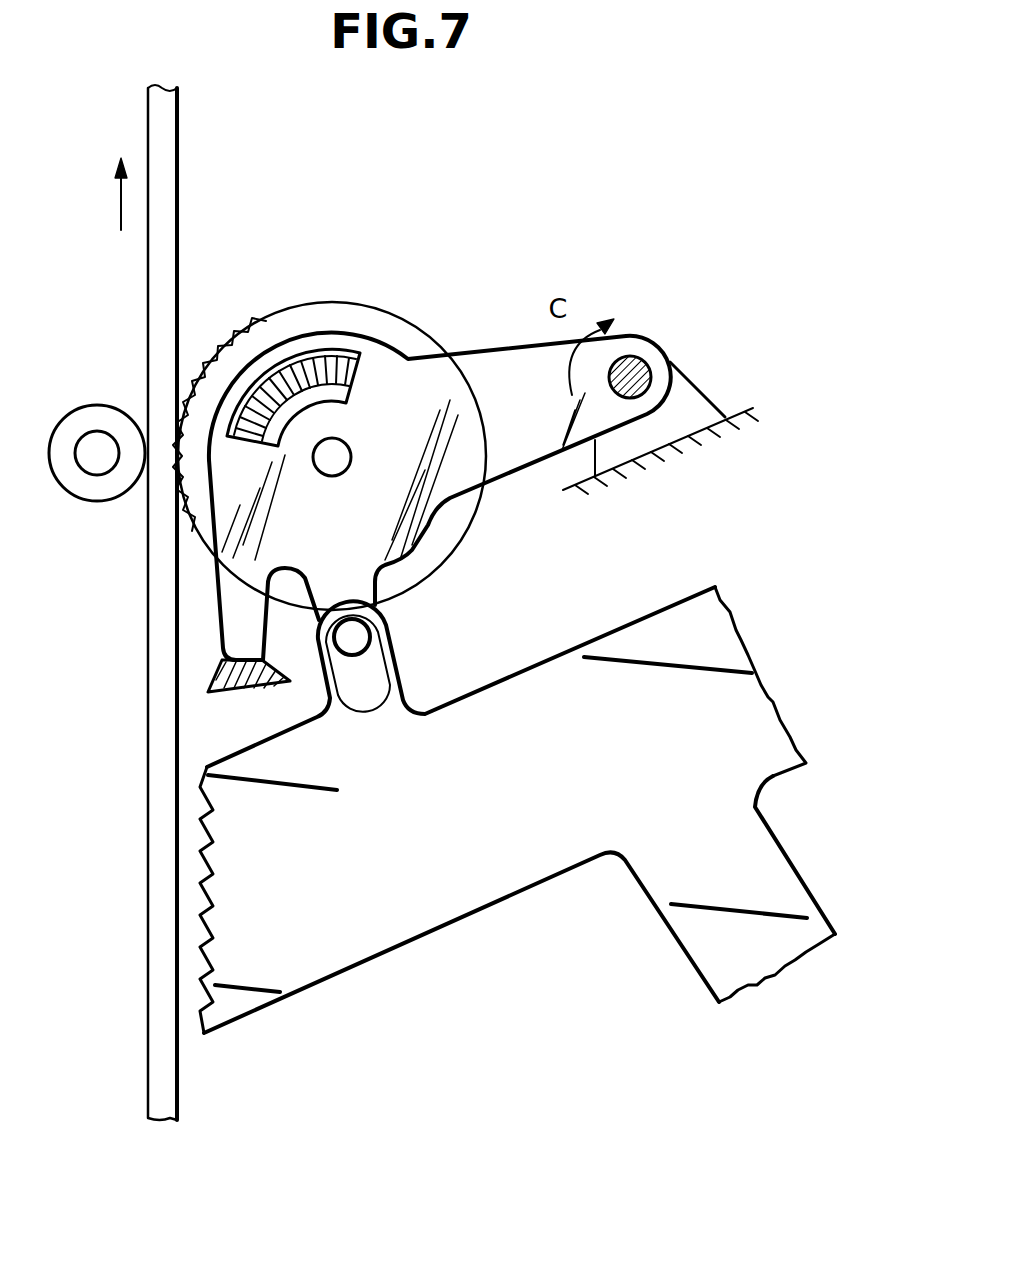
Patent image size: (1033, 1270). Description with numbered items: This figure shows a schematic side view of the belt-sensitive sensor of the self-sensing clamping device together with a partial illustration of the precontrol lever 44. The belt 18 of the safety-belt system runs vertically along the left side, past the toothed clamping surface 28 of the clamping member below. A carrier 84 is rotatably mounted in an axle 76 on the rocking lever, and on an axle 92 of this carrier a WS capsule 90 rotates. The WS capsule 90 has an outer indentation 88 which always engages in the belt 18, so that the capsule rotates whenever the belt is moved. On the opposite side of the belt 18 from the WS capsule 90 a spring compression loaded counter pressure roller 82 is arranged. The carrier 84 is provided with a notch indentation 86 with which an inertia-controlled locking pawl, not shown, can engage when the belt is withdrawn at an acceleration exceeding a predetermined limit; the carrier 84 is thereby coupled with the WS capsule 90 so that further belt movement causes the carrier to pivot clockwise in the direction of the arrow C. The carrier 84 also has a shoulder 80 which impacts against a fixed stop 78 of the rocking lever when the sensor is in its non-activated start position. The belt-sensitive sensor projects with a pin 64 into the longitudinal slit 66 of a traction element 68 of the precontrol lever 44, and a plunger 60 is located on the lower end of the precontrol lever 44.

The belt 18 is at (172, 213).
The clamping surface 28 is at (203, 930).
The precontrol lever 44 is at (535, 878).
The plunger 60 is at (706, 948).
The pin 64 is at (372, 638).
The longitudinal slit 66 is at (378, 708).
The traction element 68 is at (328, 688).
The axle 76 is at (640, 357).
The fixed stop 78 is at (210, 690).
The shoulder 80 is at (222, 642).
The counter pressure roller 82 is at (96, 503).
The carrier 84 is at (505, 353).
The notch indentation 86 is at (322, 355).
The outer indentation 88 is at (260, 322).
The WS capsule 90 is at (384, 306).
The axle 92 is at (343, 451).